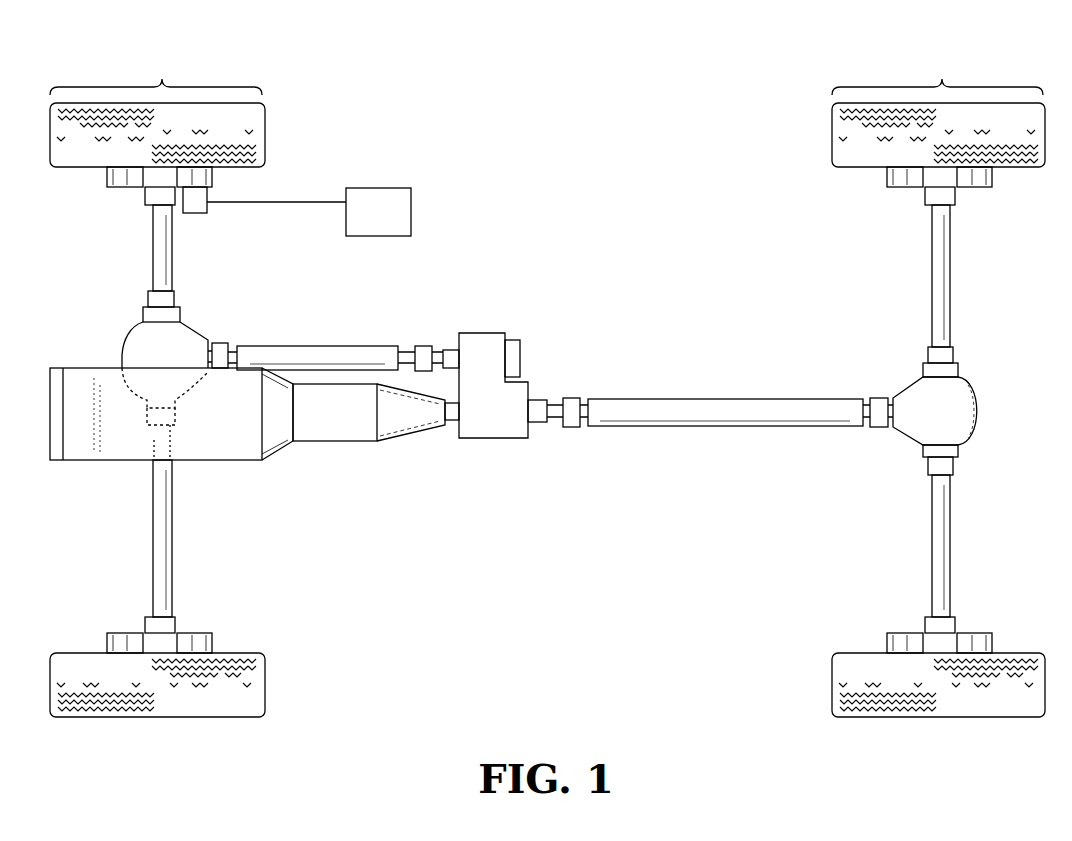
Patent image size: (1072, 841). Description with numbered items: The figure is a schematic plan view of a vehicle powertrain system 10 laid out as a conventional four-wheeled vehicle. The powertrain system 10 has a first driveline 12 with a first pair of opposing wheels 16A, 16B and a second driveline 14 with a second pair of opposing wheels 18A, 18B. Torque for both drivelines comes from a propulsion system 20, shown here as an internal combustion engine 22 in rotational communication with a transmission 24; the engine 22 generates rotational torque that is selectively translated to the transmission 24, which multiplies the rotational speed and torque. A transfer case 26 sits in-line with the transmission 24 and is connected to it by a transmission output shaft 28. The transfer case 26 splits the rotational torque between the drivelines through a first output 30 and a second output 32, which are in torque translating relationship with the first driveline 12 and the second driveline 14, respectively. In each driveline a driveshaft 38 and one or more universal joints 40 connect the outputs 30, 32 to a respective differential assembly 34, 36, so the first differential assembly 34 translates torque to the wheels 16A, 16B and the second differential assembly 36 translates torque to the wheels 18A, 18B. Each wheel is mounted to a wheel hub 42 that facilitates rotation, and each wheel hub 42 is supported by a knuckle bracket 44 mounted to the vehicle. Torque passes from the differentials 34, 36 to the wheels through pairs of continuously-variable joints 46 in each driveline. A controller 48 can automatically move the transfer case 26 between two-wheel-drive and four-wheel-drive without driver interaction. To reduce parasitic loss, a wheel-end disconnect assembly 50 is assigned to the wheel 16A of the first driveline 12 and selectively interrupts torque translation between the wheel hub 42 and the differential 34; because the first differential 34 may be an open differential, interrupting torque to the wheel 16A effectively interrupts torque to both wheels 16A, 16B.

The vehicle powertrain system 10 is at (476, 112).
The first driveline 12 is at (156, 70).
The second driveline 14 is at (937, 70).
The first wheel of the first pair of opposing wheels 16A is at (253, 122).
The second wheel of the first pair of opposing wheels 16B is at (255, 693).
The first wheel of the second pair of opposing wheels 18A is at (833, 153).
The second wheel of the second pair of opposing wheels 18B is at (832, 673).
The propulsion system 20 is at (266, 464).
The internal combustion engine 22 is at (156, 414).
The transmission 24 is at (353, 414).
The transfer case 26 is at (493, 385).
The transmission output shaft 28 is at (453, 422).
The first output 30 is at (452, 350).
The second output 32 is at (538, 423).
The first differential assembly 34 is at (165, 375).
The second differential assembly 36 is at (935, 411).
The driveshaft 38 is at (320, 350).
The universal joint 40 is at (220, 343).
The wheel hub 42 is at (142, 191).
The knuckle bracket 44 is at (107, 174).
The continuously-variable joint 46 is at (160, 271).
The controller 48 is at (378, 212).
The wheel-end disconnect assembly 50 is at (197, 197).